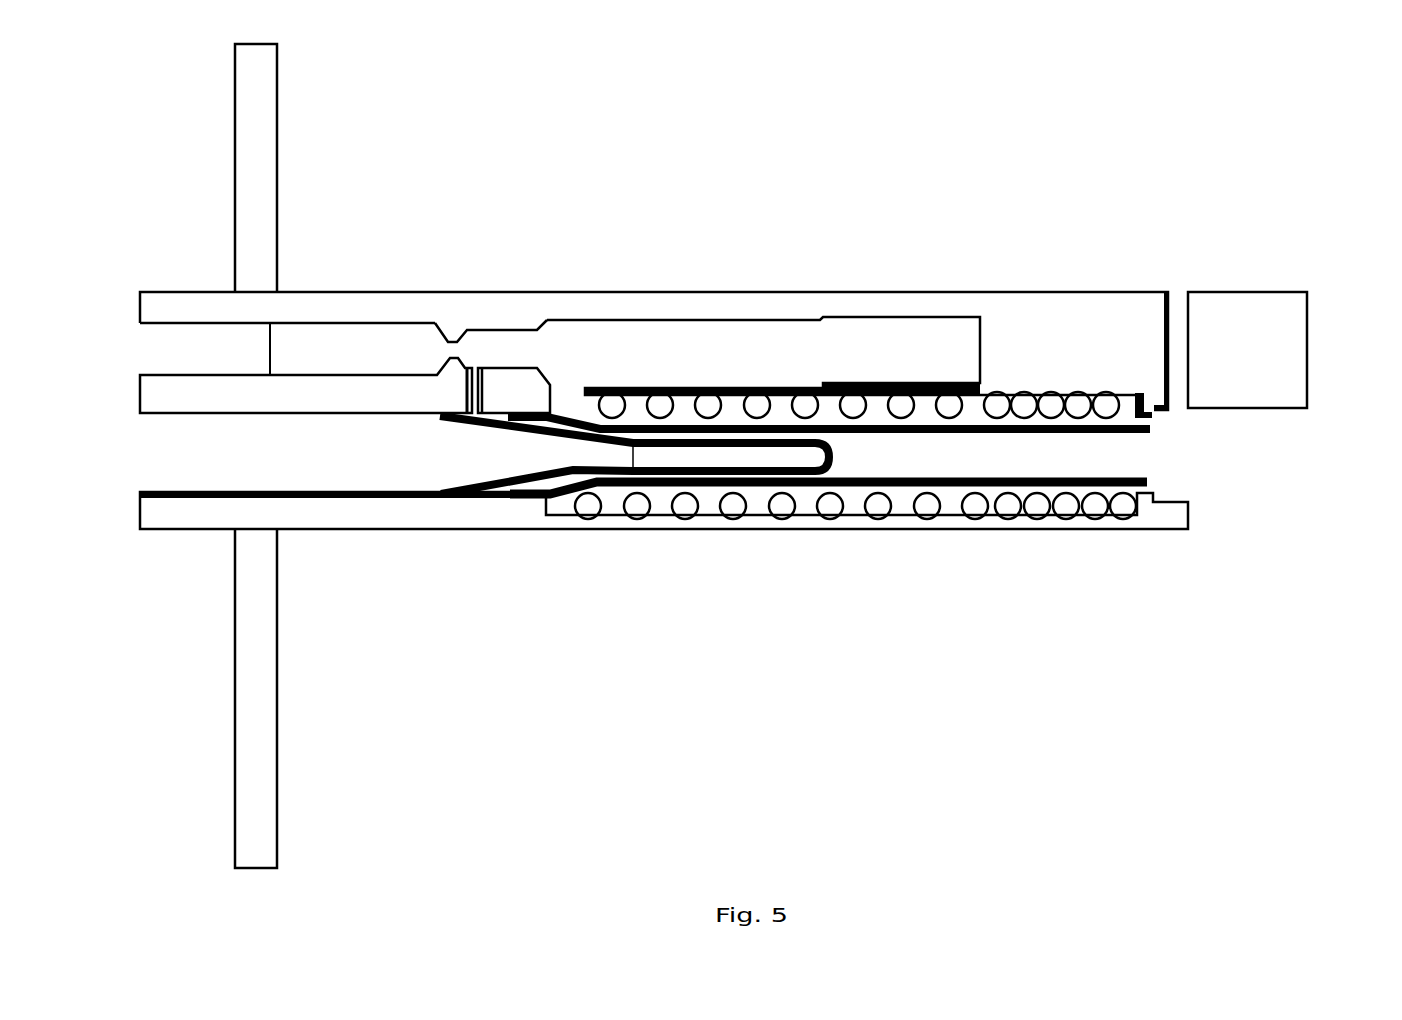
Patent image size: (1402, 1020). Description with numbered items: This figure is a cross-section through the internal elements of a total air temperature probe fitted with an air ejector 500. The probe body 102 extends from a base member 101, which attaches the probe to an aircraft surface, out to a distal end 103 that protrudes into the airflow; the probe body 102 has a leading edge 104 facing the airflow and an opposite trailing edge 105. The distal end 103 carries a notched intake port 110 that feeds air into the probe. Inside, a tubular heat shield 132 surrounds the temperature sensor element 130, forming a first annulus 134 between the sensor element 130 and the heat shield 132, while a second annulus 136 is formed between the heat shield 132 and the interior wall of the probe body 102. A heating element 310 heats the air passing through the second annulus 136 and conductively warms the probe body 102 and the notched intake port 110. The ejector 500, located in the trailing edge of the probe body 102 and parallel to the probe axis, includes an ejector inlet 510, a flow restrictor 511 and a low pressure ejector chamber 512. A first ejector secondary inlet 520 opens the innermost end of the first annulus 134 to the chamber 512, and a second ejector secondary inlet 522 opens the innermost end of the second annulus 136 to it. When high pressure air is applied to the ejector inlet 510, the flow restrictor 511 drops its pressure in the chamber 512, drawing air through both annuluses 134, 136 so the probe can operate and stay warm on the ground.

The base member 101 is at (277, 80).
The probe body 102 is at (408, 291).
The distal end 103 is at (1255, 270).
The leading edge 104 is at (835, 531).
The trailing edge 105 is at (893, 291).
The notched intake port 110 is at (1315, 469).
The temperature sensor element 130 is at (753, 464).
The tubular heat shield 132 is at (937, 433).
The first annulus 134 is at (1080, 454).
The second annulus 136 is at (1122, 419).
The heating element 310 is at (565, 510).
The air ejector 500 is at (658, 272).
The ejector inlet 510 is at (176, 350).
The flow restrictor 511 is at (459, 328).
The low pressure ejector chamber 512 is at (710, 359).
The first ejector secondary inlet 520 is at (477, 368).
The second ejector secondary inlet 522 is at (562, 381).